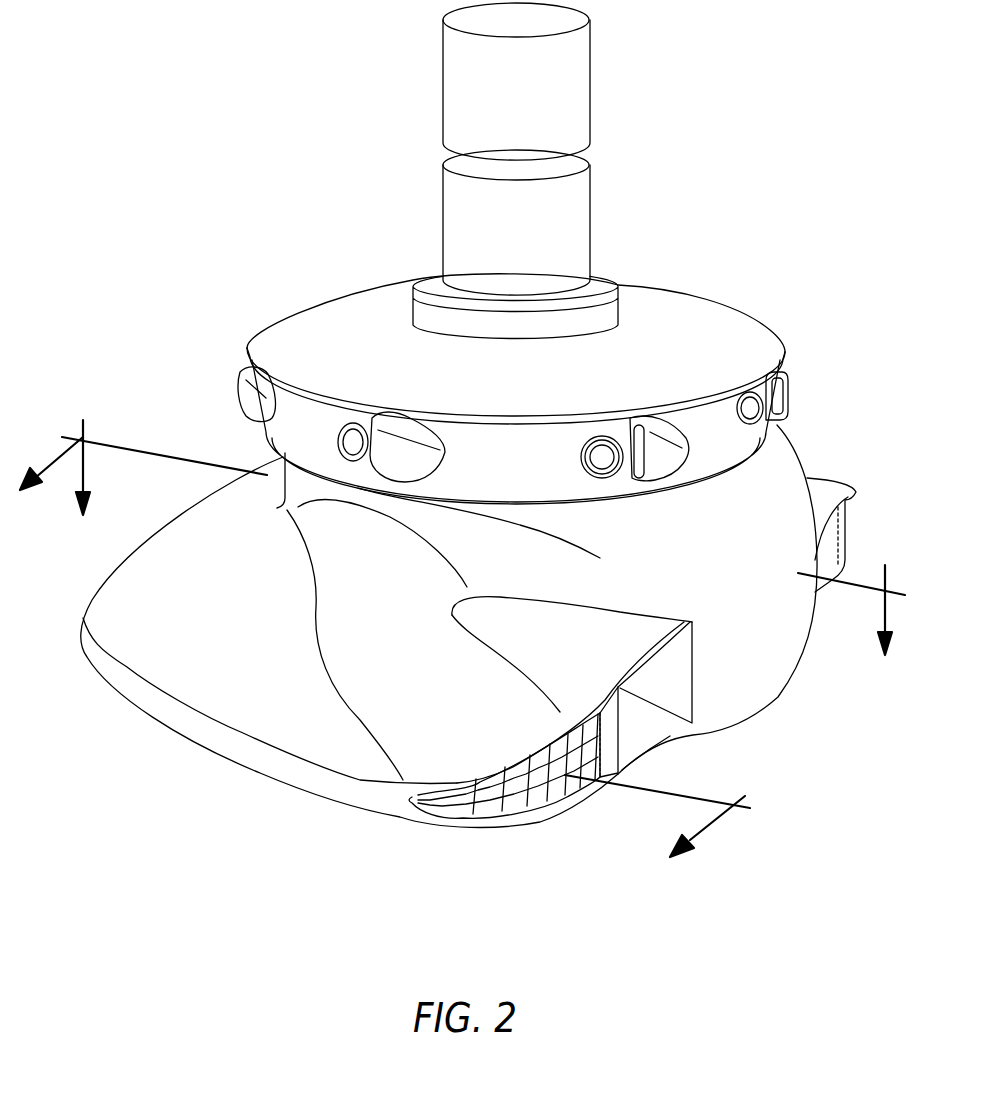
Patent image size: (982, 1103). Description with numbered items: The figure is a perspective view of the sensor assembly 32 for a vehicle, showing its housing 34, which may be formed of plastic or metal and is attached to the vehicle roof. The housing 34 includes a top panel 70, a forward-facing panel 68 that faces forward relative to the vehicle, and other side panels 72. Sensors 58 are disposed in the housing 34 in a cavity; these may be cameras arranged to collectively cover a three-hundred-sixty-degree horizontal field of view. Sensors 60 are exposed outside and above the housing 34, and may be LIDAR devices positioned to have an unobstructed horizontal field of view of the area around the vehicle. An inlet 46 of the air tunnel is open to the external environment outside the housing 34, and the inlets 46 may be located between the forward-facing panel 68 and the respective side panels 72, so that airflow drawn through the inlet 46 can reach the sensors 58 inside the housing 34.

The sensor assembly 32 is at (733, 127).
The sensors 60 is at (590, 187).
The top panel 70 is at (692, 288).
The sensors 58 is at (338, 437).
The housing 34 is at (793, 445).
The forward-facing panel 68 is at (760, 712).
The side panels 72 is at (358, 488).
The inlet 46 is at (535, 815).